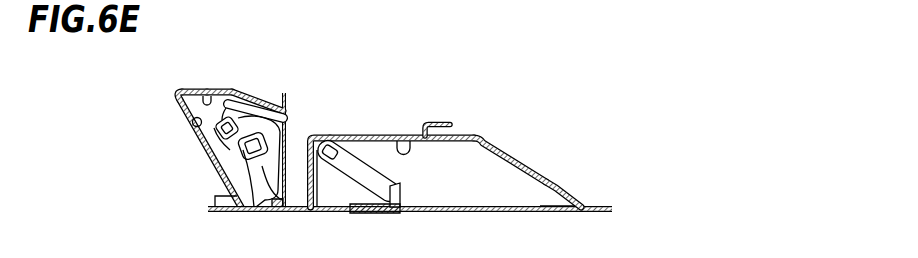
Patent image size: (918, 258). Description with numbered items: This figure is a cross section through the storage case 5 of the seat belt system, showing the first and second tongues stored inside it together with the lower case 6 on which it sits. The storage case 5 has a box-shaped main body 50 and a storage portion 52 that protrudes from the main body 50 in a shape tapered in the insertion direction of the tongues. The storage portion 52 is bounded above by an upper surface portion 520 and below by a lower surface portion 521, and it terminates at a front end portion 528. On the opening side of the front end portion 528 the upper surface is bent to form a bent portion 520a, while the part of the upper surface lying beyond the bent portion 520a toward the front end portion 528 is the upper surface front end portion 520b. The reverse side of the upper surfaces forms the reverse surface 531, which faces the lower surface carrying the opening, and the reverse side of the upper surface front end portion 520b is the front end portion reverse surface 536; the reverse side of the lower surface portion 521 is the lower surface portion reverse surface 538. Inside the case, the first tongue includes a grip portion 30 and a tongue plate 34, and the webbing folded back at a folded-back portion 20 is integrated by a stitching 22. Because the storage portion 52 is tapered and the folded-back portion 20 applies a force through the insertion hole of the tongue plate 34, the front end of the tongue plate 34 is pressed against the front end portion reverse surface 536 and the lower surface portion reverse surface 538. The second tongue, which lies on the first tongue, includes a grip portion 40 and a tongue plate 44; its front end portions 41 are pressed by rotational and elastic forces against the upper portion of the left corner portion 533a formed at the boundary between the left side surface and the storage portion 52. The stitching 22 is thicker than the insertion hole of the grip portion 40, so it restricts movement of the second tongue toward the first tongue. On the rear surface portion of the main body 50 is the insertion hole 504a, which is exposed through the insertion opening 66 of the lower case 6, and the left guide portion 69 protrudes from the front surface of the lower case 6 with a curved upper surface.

The storage case 5 is at (455, 163).
The base plate 6 is at (426, 216).
The folded-back portion 20 is at (250, 168).
The stitching 22 is at (278, 203).
The grip portion 30 is at (254, 123).
The tongue plate 34 is at (216, 126).
The grip portion 40 is at (385, 198).
The front end portions 41 is at (328, 139).
The tongue plate 44 is at (224, 119).
The main body 50 is at (503, 148).
The storage portion 52 is at (217, 110).
The insertion opening 66 is at (560, 213).
The left guide portion 69 is at (401, 195).
The insertion hole 504a is at (528, 171).
The upper surface portion 520 is at (270, 100).
The bent portion 520a is at (228, 89).
The upper surface front end portion 520b is at (197, 88).
The lower surface portion 521 is at (187, 115).
The front end portion 528 is at (176, 96).
The reverse surface 531 is at (413, 136).
The left corner portion 533a is at (315, 136).
The front end portion reverse surface 536 is at (205, 96).
The lower surface portion reverse surface 538 is at (193, 124).